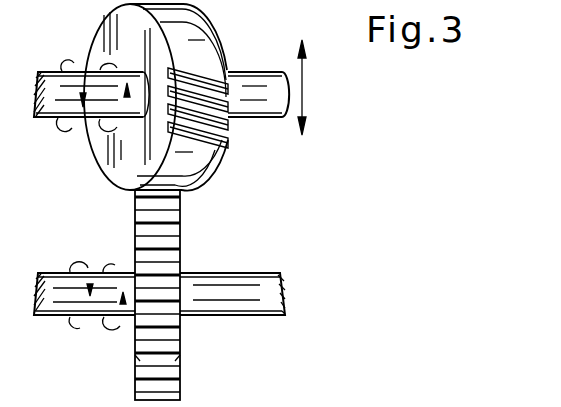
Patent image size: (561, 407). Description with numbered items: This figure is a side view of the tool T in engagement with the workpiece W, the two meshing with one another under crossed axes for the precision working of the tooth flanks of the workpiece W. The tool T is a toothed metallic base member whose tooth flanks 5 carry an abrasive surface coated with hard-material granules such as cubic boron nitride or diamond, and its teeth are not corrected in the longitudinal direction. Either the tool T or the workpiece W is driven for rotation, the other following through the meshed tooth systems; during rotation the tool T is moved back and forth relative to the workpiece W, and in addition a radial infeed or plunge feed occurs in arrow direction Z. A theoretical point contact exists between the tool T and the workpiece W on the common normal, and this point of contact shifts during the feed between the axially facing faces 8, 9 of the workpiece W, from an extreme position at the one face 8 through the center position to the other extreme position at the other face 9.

The tool T is at (122, 25).
The tooth flanks 5 is at (222, 138).
The arrow direction Z is at (302, 93).
The workpiece W is at (143, 224).
The face 8 is at (135, 358).
The face 9 is at (180, 356).